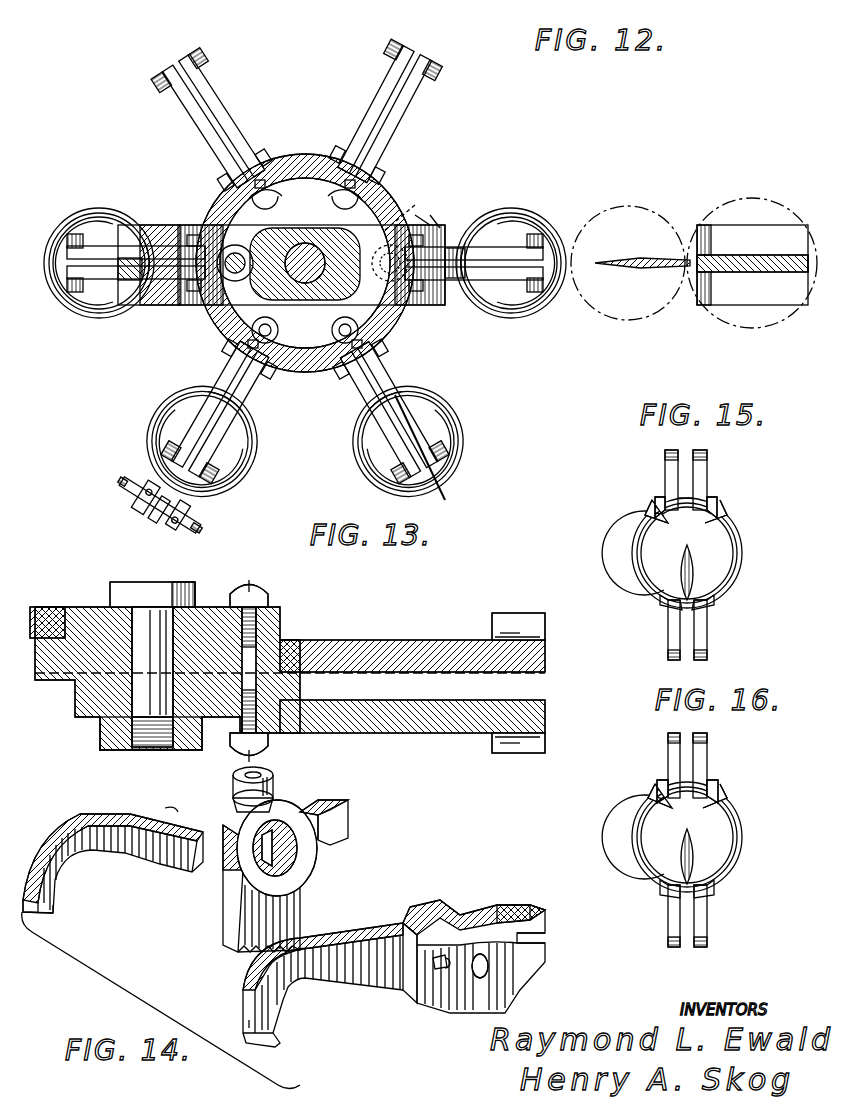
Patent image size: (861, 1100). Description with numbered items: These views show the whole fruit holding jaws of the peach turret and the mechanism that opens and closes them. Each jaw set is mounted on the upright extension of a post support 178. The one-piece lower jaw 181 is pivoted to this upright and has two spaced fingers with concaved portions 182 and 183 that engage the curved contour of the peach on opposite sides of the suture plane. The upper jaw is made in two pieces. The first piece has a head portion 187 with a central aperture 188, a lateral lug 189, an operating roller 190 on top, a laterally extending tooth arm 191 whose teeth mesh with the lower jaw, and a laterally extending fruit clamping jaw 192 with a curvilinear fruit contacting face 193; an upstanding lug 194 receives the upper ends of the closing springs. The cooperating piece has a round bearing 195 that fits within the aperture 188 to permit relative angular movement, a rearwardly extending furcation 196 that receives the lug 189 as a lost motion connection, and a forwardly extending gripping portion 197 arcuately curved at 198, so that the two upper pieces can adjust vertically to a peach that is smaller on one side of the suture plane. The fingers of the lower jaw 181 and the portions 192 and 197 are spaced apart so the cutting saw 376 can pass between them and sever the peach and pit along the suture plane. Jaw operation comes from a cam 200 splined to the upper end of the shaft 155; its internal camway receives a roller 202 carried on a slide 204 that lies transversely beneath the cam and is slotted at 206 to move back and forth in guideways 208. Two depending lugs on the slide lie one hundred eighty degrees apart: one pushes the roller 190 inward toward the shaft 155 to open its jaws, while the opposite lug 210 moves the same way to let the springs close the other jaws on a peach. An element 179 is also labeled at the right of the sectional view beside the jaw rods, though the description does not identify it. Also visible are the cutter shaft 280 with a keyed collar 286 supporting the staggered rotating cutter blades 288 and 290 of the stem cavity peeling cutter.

In FIG. 12, the shaft 155 is at (305, 243).
In FIG. 13, the post support 178 is at (100, 748).
In FIG. 12, the blade 179 is at (520, 235).
In FIG. 16, the lower jaw 181 is at (668, 940).
In FIG. 16, the concaved portion 182 is at (662, 895).
In FIG. 16, the concaved portion 183 is at (712, 895).
In FIG. 14, the head portion 187 is at (283, 815).
In FIG. 13, the aperture 188 is at (185, 608).
In FIG. 14, the aperture 188 is at (278, 852).
In FIG. 13, the lateral lug 189 is at (70, 600).
In FIG. 14, the lateral lug 189 is at (350, 822).
In FIG. 12, the operating roller 190 is at (345, 196).
In FIG. 14, the operating roller 190 is at (230, 786).
In FIG. 14, the tooth arm 191 is at (228, 915).
In FIG. 12, the fruit clamping jaw 192 is at (205, 131).
In FIG. 13, the fruit clamping jaw 192 is at (375, 640).
In FIG. 14, the fruit clamping jaw 192 is at (70, 878).
In FIG. 15, the fruit clamping jaw 192 is at (665, 468).
In FIG. 16, the fruit clamping jaw 192 is at (668, 745).
In FIG. 13, the curvilinear fruit contacting face 193 is at (506, 620).
In FIG. 14, the curvilinear fruit contacting face 193 is at (38, 912).
In FIG. 15, the curvilinear fruit contacting face 193 is at (655, 520).
In FIG. 16, the curvilinear fruit contacting face 193 is at (655, 800).
In FIG. 12, the upstanding lug 194 is at (398, 332).
In FIG. 13, the upstanding lug 194 is at (270, 588).
In FIG. 14, the upstanding lug 194 is at (172, 815).
In FIG. 13, the round bearing 195 is at (100, 693).
In FIG. 14, the round bearing 195 is at (425, 912).
In FIG. 13, the furcation 196 is at (45, 605).
In FIG. 14, the furcation 196 is at (508, 905).
In FIG. 12, the gripping portion 197 is at (228, 104).
In FIG. 13, the gripping portion 197 is at (405, 722).
In FIG. 14, the gripping portion 197 is at (335, 985).
In FIG. 15, the gripping portion 197 is at (707, 468).
In FIG. 16, the gripping portion 197 is at (707, 748).
In FIG. 13, the arcuate curve 198 is at (505, 750).
In FIG. 14, the arcuate curve 198 is at (242, 1025).
In FIG. 15, the arcuate curve 198 is at (715, 515).
In FIG. 16, the arcuate curve 198 is at (715, 805).
In FIG. 12, the cam 200 is at (205, 213).
In FIG. 12, the roller 202 is at (208, 302).
In FIG. 12, the slide 204 is at (440, 222).
In FIG. 12, the slot 206 is at (395, 225).
In FIG. 12, the guideway 208 is at (125, 235).
In FIG. 12, the lug 210 is at (455, 226).
In FIG. 12, the shaft 280 is at (125, 490).
In FIG. 12, the collar 286 is at (150, 515).
In FIG. 12, the cutter blade 288 is at (145, 485).
In FIG. 12, the cutter blade 290 is at (190, 503).
In FIG. 12, the cutting saw 376 is at (440, 492).